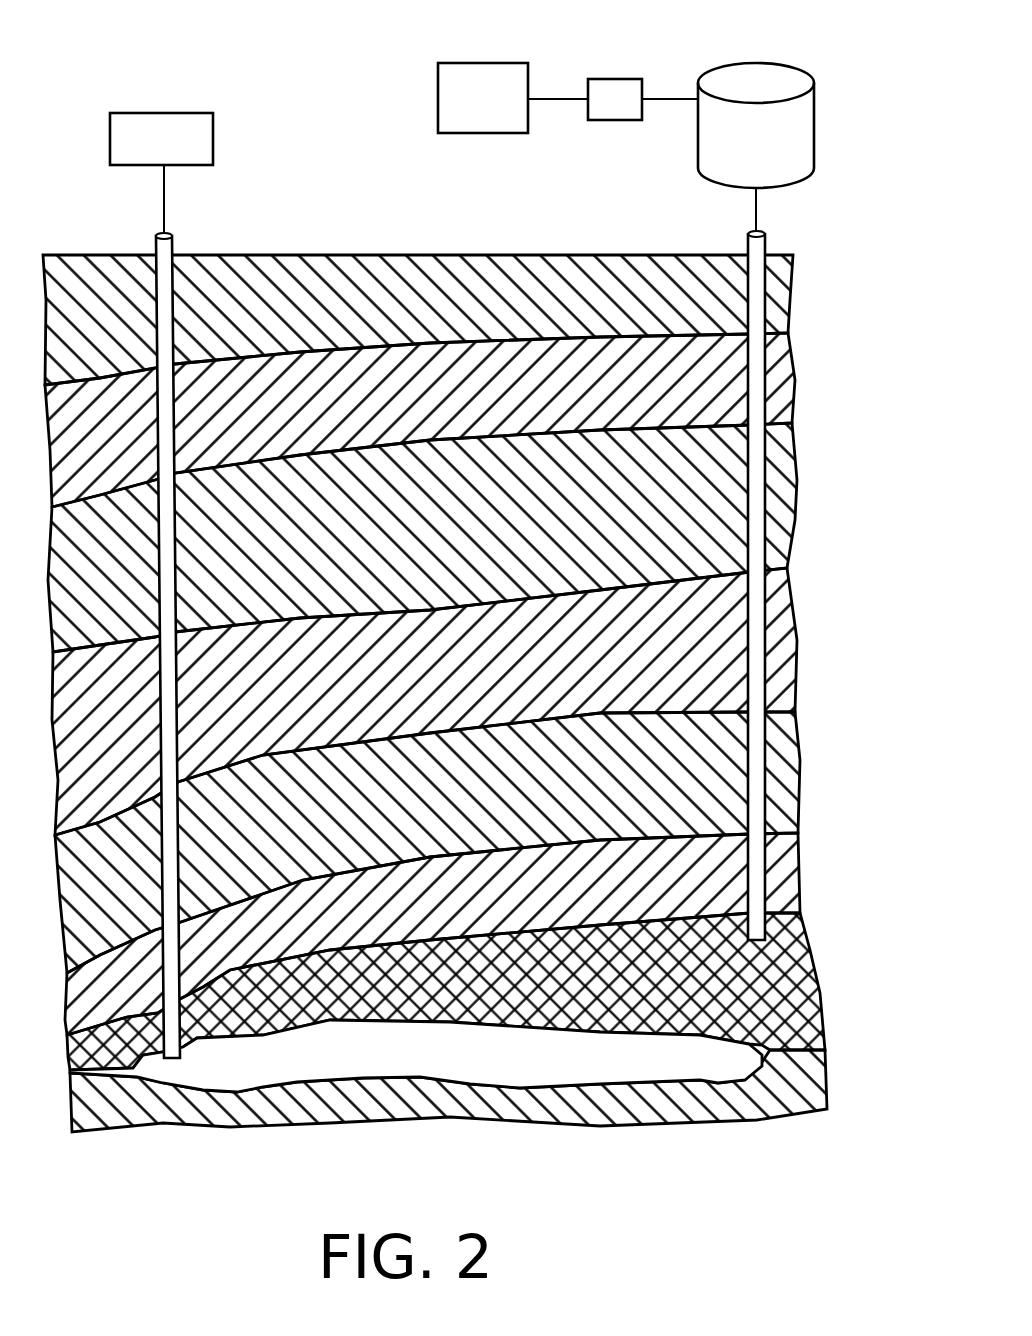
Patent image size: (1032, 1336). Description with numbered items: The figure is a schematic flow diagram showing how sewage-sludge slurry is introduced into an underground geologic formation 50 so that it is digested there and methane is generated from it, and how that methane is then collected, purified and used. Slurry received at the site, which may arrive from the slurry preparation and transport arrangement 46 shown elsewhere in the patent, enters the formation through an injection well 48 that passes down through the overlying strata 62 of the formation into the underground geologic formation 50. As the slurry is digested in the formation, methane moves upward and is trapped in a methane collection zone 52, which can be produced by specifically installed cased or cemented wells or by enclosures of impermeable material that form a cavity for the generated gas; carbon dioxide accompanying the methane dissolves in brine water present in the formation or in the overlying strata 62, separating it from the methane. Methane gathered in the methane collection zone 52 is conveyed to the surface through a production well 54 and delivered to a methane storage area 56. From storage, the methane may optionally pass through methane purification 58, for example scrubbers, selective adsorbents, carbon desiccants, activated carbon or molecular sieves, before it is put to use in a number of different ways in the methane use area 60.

The apparatus of FIG. 1 (downhole measurement device) 46 is at (165, 113).
The injection well 48 is at (158, 237).
The underground geologic formation 50 is at (297, 1060).
The methane collection zone 52 is at (804, 963).
The production well 54 is at (768, 240).
The methane storage area 56 is at (752, 63).
The methane purification 58 is at (612, 79).
The methane use area 60 is at (458, 63).
The subsurface formation strata 62 is at (850, 255).